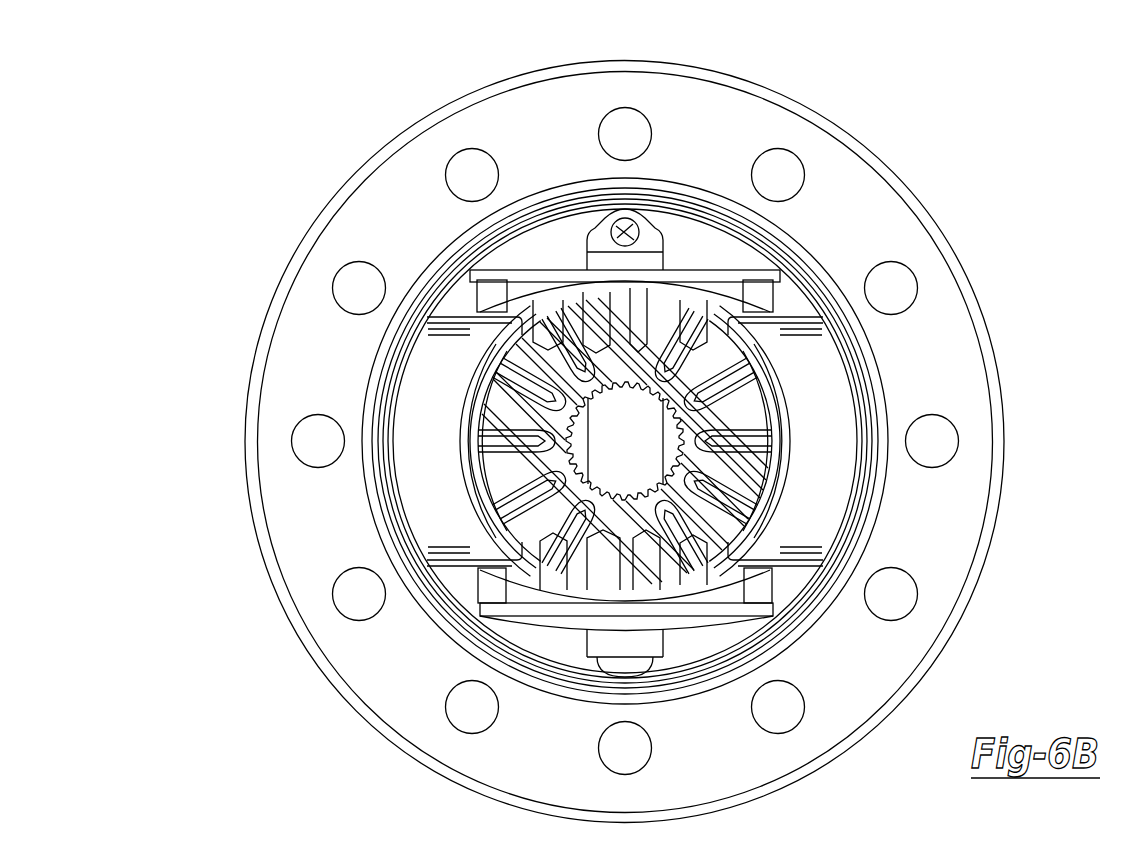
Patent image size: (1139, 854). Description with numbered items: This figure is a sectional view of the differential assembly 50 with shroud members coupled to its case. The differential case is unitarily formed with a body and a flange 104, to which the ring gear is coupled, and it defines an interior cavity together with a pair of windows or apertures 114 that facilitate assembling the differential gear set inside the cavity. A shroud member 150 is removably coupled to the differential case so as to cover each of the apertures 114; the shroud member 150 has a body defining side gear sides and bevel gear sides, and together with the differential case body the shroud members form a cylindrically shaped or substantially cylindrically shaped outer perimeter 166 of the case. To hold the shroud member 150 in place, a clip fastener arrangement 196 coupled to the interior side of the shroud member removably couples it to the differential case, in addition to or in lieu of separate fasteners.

The differential assembly 50 is at (627, 425).
The flange 104 is at (965, 265).
The outer perimeter 166 is at (562, 186).
The shroud member 150 is at (513, 252).
The clip fastener arrangement 196 is at (462, 358).
The windows or apertures 114 is at (468, 468).